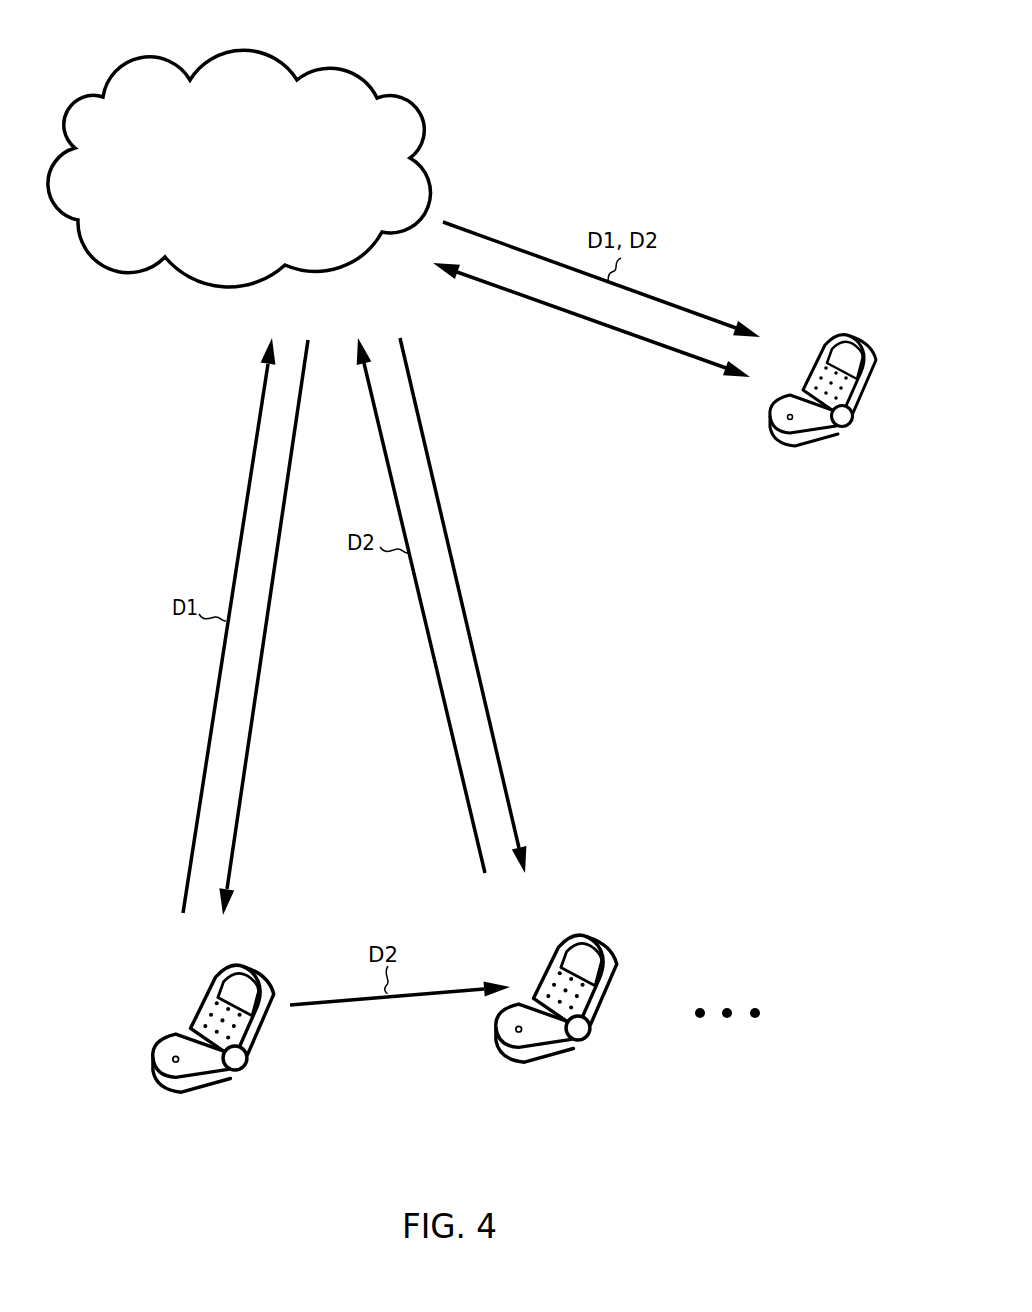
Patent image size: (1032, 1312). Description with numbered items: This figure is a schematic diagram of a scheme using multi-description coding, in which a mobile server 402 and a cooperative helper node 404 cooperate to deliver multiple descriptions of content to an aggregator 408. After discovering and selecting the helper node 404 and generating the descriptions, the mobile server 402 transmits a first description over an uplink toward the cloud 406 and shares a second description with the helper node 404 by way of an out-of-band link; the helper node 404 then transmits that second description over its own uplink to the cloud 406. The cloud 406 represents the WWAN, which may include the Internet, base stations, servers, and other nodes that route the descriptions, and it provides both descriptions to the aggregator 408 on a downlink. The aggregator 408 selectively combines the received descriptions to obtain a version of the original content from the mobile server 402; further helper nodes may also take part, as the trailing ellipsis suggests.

The mobile server 402 is at (255, 970).
The cooperative helper node 404 is at (598, 940).
The cloud 406 is at (270, 50).
The aggregator 408 is at (849, 334).